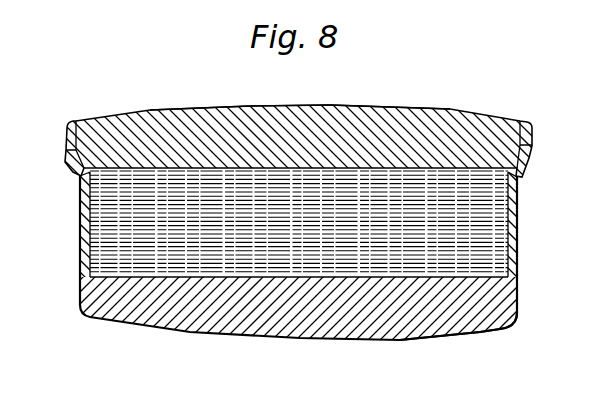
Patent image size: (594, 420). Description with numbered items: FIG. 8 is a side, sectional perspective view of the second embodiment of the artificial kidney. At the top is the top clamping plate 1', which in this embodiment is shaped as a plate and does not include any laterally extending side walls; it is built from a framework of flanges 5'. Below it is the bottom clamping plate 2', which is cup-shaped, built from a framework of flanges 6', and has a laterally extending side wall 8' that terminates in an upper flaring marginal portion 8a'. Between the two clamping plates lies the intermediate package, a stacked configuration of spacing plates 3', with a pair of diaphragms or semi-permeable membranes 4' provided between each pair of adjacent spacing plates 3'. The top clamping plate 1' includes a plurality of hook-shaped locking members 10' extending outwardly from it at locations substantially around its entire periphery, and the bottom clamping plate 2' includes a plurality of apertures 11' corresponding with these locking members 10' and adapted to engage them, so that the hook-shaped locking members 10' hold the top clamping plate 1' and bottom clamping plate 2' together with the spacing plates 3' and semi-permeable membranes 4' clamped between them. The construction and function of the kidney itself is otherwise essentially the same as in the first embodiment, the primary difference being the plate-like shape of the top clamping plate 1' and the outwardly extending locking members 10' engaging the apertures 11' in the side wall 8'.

The top clamping plate 1' is at (297, 210).
The bottom clamping plate 2' is at (297, 210).
The spacing plates 3' is at (297, 210).
The semi-permeable membranes 4' is at (299, 270).
The flanges 5' is at (300, 95).
The flanges 6' is at (458, 342).
The laterally extending side wall 8' is at (297, 210).
The upper flaring marginal portion 8a' is at (514, 118).
The hook-shaped locking members 10' is at (301, 173).
The apertures 11' is at (327, 187).